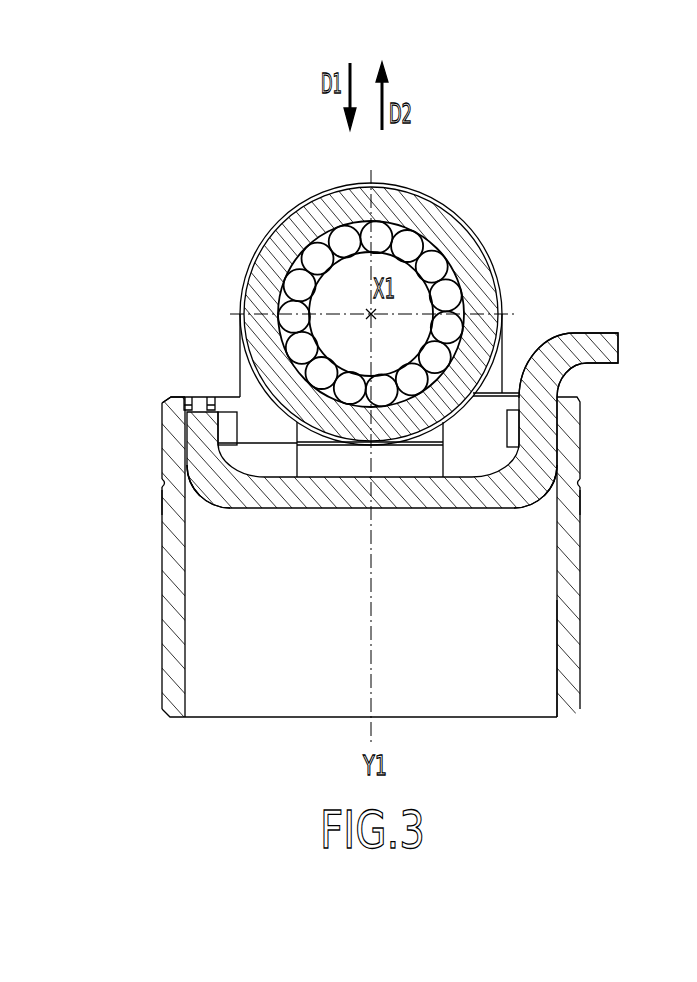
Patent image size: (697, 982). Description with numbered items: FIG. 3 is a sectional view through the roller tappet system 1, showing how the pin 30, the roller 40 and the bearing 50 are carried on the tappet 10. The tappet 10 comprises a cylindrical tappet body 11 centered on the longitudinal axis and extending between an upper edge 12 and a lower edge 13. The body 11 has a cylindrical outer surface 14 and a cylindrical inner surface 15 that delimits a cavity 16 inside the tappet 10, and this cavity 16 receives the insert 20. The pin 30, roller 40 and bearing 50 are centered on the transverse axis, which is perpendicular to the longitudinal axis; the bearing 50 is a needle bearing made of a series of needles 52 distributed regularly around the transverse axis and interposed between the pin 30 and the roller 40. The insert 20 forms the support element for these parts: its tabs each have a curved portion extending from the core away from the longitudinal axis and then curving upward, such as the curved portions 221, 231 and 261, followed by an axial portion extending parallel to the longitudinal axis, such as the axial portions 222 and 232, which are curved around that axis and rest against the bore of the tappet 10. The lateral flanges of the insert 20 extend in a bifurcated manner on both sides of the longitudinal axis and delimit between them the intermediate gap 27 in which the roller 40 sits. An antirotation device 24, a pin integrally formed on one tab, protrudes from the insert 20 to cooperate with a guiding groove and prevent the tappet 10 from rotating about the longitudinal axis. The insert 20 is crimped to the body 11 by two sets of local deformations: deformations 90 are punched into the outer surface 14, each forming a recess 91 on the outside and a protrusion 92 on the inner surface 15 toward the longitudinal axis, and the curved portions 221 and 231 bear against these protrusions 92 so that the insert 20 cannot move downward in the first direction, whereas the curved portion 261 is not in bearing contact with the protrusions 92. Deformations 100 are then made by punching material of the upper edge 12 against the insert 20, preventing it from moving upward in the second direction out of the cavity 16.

The system 1 is at (358, 281).
The tappet 10 is at (348, 537).
The tappet body 11 is at (175, 633).
The upper edge 12 is at (168, 392).
The lower edge 13 is at (178, 720).
The outer surface 14 is at (581, 667).
The inner surface 15 is at (555, 680).
The cavity 16 is at (440, 675).
The insert 20 is at (362, 467).
The antirotation device 24 is at (607, 333).
The intermediate gap 27 is at (502, 370).
The pin 30 is at (320, 305).
The roller 40 is at (420, 205).
The bearing 50 is at (317, 257).
The needles 52 is at (307, 245).
The local deformations 90 is at (158, 503).
The recess 91 is at (160, 483).
The protrusion 92 is at (193, 505).
The local deformations 100 is at (207, 396).
The curved portion 221 is at (210, 487).
The axial portion 222 is at (198, 447).
The curved portion 231 is at (527, 487).
The axial portion 232 is at (540, 430).
The curved portion 261 is at (390, 455).